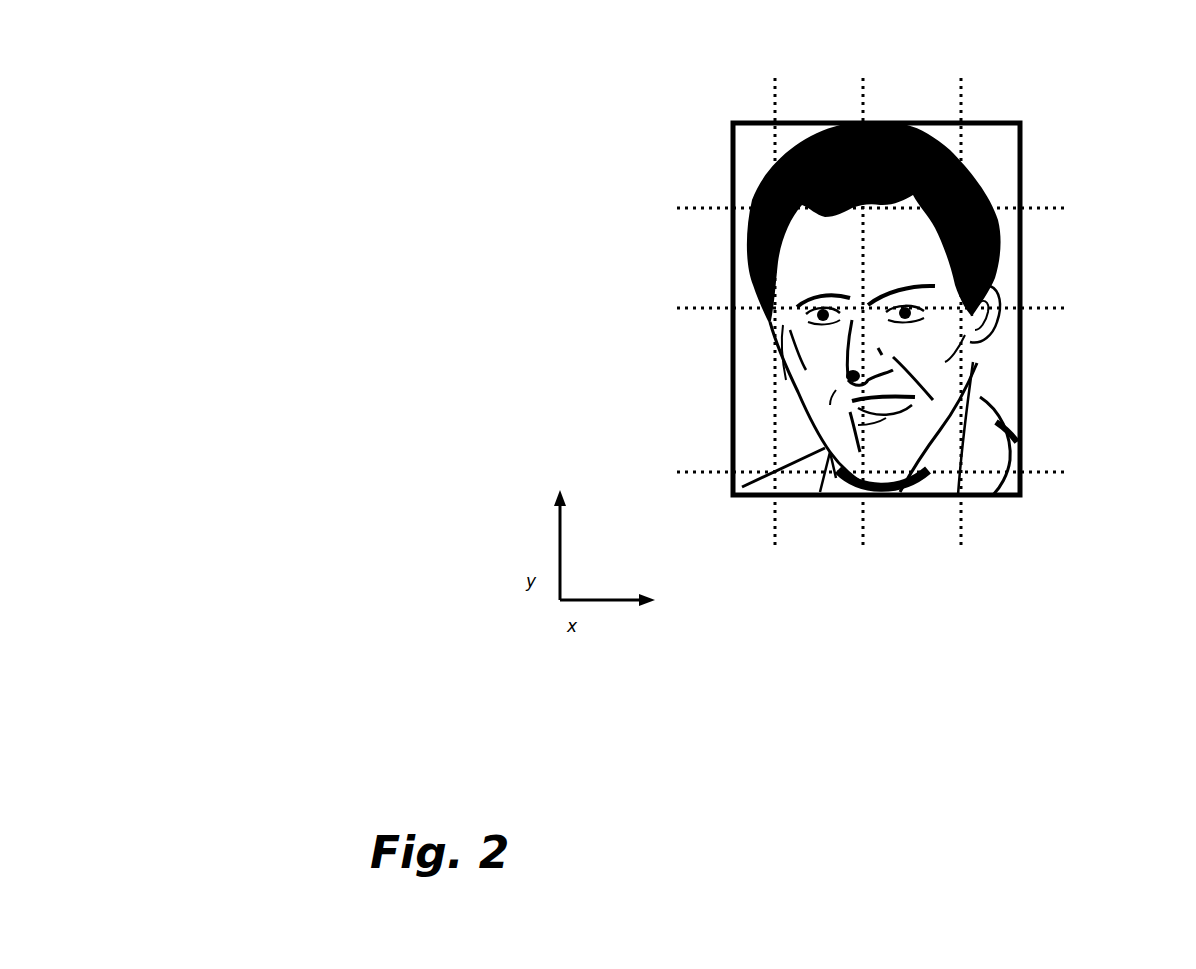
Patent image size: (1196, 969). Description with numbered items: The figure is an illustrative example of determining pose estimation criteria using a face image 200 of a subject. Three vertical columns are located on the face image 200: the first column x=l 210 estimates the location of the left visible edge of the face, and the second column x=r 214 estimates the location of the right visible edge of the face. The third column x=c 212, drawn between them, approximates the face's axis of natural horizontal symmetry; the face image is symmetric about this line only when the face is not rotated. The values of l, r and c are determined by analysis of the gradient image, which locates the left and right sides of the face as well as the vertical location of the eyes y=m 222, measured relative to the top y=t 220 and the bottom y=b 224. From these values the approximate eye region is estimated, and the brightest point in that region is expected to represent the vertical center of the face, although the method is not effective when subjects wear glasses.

The face image 200 is at (710, 107).
The first column x=l 210 is at (788, 570).
The third column x=c 212 is at (870, 570).
The second column x=r 214 is at (968, 568).
The top y=t 220 is at (1084, 202).
The vertical location of the eyes y=m 222 is at (1085, 301).
The bottom y=b 224 is at (1082, 465).